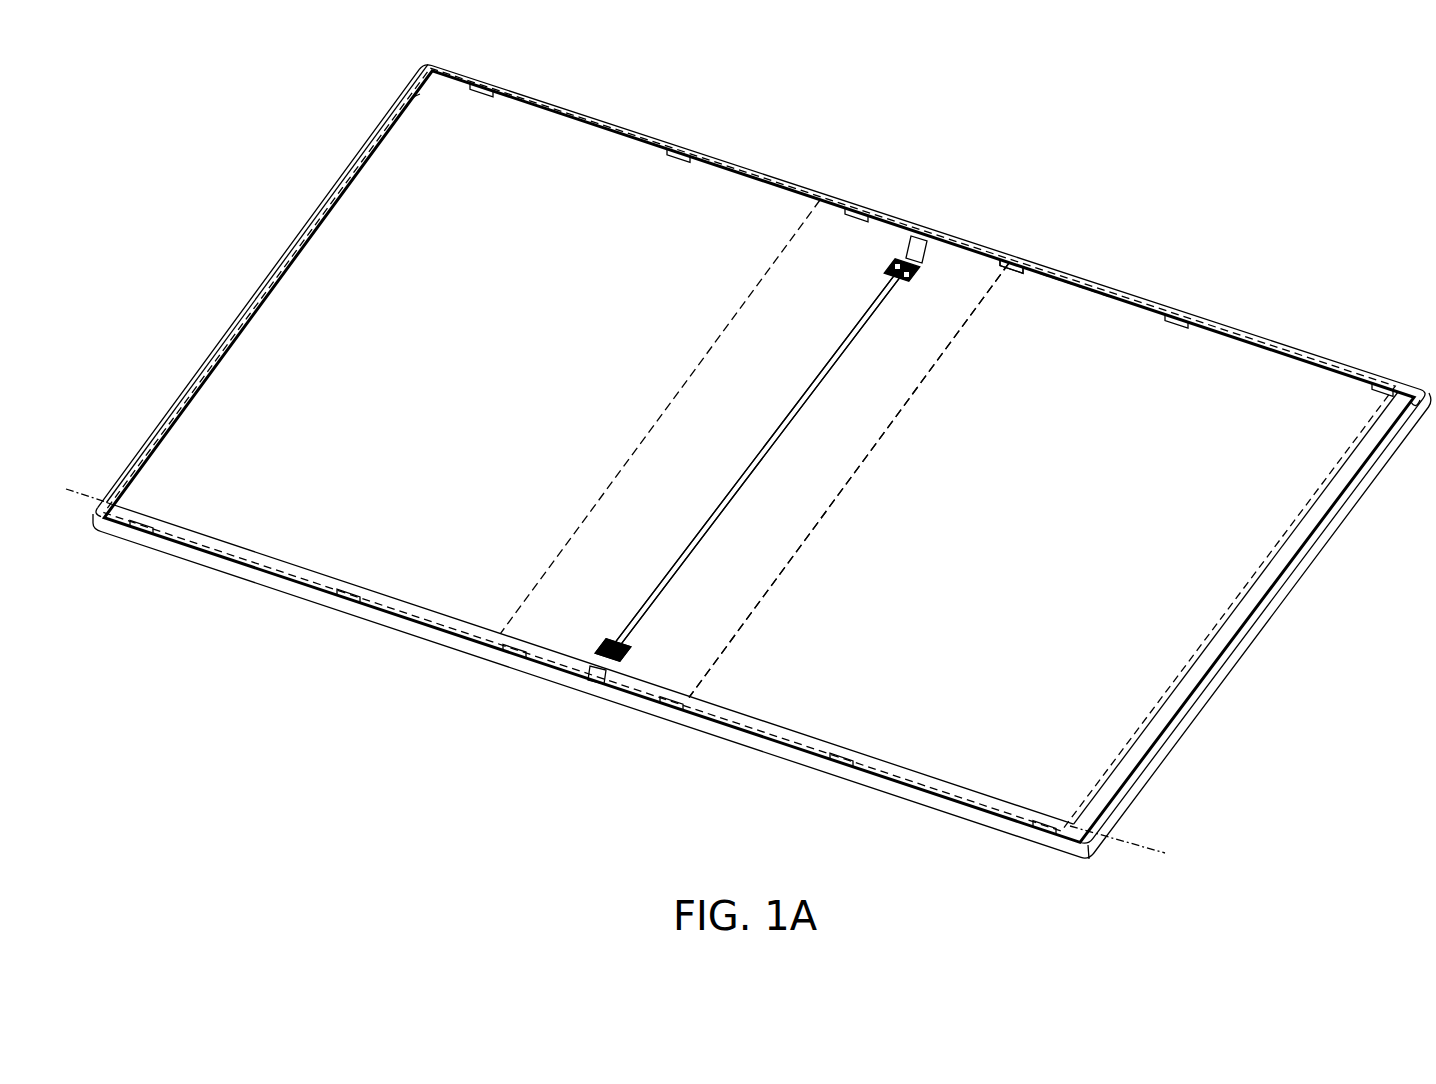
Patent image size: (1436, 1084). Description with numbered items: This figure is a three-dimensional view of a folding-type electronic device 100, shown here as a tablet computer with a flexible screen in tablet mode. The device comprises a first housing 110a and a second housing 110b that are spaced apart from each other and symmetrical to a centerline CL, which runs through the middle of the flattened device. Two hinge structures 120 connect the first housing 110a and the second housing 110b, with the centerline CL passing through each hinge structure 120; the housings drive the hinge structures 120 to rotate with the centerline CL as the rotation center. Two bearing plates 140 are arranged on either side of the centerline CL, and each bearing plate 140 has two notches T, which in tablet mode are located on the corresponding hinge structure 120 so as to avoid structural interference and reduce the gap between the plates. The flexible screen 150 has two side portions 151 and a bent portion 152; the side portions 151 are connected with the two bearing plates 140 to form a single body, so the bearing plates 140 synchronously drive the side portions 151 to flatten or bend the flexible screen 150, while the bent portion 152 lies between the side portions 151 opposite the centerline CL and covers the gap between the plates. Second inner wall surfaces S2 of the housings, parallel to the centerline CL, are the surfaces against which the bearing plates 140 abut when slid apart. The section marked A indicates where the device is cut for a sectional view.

The folding-type electronic device 100 is at (1405, 881).
The first housing 110a is at (568, 678).
The second housing 110b is at (617, 695).
The hinge structure 120 is at (913, 246).
The bearing plate 140 is at (736, 201).
The flexible screen 150 is at (1163, 213).
The side portion 151 is at (1060, 316).
The bent portion 152 is at (962, 277).
The centerline CL is at (592, 685).
The notch T is at (640, 628).
The second inner wall surface S2 is at (407, 100).
The section line A- A is at (78, 491).